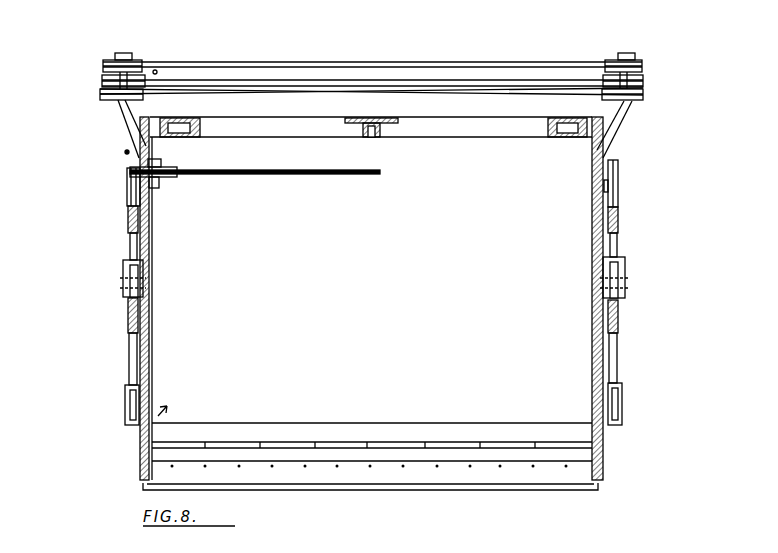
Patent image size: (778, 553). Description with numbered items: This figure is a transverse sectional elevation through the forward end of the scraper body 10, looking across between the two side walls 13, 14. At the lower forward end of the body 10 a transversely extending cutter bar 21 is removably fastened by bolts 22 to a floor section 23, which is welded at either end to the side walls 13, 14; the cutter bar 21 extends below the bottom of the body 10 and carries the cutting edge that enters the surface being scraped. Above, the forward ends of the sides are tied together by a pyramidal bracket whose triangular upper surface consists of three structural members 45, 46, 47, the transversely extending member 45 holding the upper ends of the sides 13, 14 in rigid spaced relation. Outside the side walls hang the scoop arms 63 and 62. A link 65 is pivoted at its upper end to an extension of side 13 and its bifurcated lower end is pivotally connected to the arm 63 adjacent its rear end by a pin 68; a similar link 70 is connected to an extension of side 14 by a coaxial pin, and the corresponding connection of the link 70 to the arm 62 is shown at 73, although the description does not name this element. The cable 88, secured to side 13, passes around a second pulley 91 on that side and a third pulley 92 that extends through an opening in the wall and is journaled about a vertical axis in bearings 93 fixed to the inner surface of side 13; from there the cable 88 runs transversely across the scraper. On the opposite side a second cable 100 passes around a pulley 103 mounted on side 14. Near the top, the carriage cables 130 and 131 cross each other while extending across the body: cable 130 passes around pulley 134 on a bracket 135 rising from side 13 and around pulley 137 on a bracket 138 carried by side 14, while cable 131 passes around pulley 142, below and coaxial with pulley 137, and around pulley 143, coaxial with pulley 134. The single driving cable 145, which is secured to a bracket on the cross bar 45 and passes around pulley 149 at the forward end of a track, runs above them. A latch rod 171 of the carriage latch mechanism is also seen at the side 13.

The scraper body 10 is at (146, 430).
The side wall 13 is at (148, 344).
The side wall 14 is at (593, 296).
The cutter bar 21 is at (333, 482).
The bolts 22 is at (370, 466).
The floor section 23 is at (583, 452).
The transversely extending member 45 is at (431, 106).
The structural member 46 is at (554, 117).
The structural member 47 is at (198, 117).
The scoop arm 62 is at (620, 317).
The scoop arm 63 is at (128, 318).
The link 65 is at (128, 232).
The pin 68 is at (121, 279).
The link 70 is at (618, 228).
The right clevis 73 is at (628, 281).
The cable 88 is at (297, 170).
The second pulley 91 is at (127, 190).
The third pulley 92 is at (165, 168).
The bearings 93 is at (163, 186).
The second cable 100 is at (619, 192).
The pulley 103 is at (619, 178).
The cable 130 is at (178, 92).
The cable 131 is at (558, 92).
The second pulley 134 is at (115, 101).
The bracket 135 is at (124, 108).
The third pulley 137 is at (645, 80).
The bracket 138 is at (630, 114).
The pulley 142 is at (645, 92).
The pulley 143 is at (103, 80).
The cable 145 is at (344, 62).
The pulley 149 is at (630, 60).
The latch rod 171 is at (124, 153).